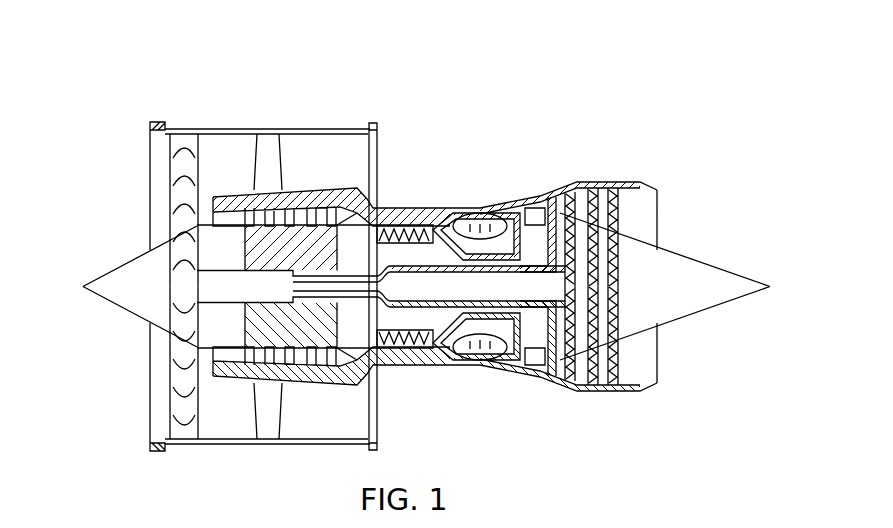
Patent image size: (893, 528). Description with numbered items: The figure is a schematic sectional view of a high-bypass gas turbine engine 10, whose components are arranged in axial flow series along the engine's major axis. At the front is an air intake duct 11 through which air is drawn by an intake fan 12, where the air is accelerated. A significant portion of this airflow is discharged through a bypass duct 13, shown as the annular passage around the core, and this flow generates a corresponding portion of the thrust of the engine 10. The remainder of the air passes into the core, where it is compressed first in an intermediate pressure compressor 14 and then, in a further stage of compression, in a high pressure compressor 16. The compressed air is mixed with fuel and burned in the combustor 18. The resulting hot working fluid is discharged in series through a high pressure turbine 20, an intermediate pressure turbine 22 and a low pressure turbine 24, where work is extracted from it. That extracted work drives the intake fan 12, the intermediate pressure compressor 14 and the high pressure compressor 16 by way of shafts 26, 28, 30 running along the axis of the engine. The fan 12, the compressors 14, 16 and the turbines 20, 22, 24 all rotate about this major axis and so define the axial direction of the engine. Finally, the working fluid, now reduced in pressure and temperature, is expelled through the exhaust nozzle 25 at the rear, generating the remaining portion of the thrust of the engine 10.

The gas turbine engine 10 is at (425, 242).
The air intake duct 11 is at (163, 163).
The intake fan 12 is at (180, 218).
The bypass duct 13 is at (366, 167).
The intermediate pressure compressor 14 is at (243, 190).
The high pressure compressor 16 is at (402, 229).
The combustor 18 is at (483, 222).
The high pressure turbine 20 is at (513, 208).
The intermediate pressure turbine 22 is at (555, 193).
The low pressure turbine 24 is at (620, 182).
The exhaust nozzle 25 is at (647, 207).
The shaft 26 is at (230, 293).
The shaft 28 is at (425, 348).
The shaft 30 is at (500, 352).